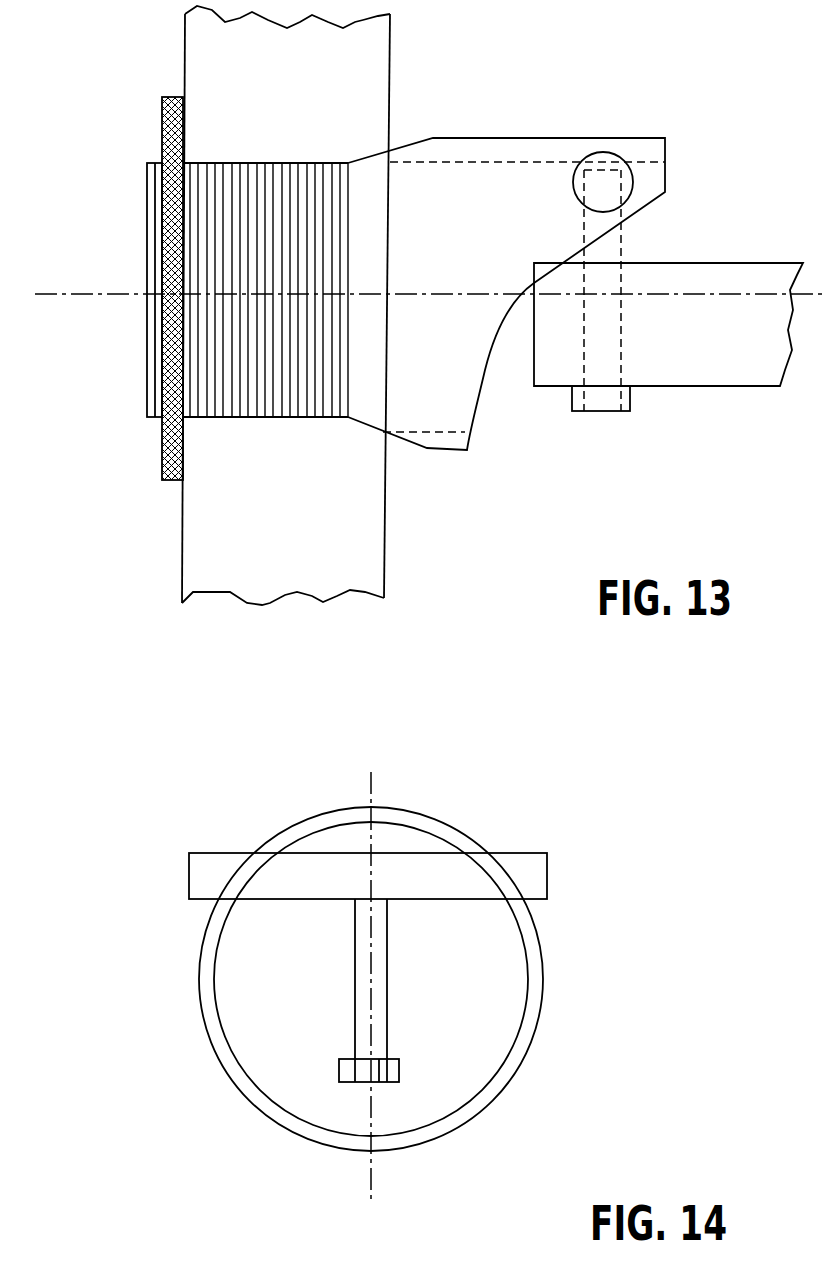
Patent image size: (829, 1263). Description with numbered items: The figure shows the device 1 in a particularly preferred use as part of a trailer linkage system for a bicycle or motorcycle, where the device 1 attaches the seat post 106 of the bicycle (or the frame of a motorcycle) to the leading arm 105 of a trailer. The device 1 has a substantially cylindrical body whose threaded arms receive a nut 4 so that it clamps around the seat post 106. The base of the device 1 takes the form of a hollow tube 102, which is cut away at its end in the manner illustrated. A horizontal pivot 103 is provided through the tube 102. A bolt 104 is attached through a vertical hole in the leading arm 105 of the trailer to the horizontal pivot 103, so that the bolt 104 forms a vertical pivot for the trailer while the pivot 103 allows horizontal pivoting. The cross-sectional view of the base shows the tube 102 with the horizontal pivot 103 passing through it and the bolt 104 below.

In FIG. 13, the device 1 is at (118, 176).
In FIG. 13, the nut 4 is at (160, 405).
In FIG. 13, the hollow tube 102 is at (540, 133).
In FIG. 14, the hollow tube 102 is at (522, 1032).
In FIG. 13, the horizontal pivot 103 is at (620, 168).
In FIG. 14, the horizontal pivot 103 is at (523, 883).
In FIG. 13, the bolt 104 is at (590, 406).
In FIG. 14, the bolt 104 is at (360, 1068).
In FIG. 13, the leading arm 105 is at (687, 347).
In FIG. 13, the seat post 106 is at (215, 66).